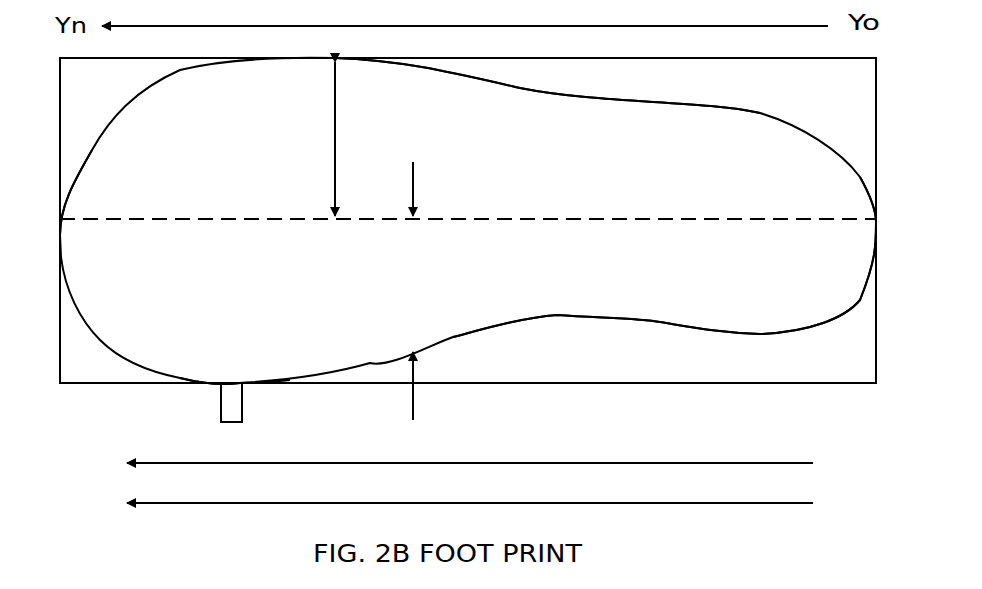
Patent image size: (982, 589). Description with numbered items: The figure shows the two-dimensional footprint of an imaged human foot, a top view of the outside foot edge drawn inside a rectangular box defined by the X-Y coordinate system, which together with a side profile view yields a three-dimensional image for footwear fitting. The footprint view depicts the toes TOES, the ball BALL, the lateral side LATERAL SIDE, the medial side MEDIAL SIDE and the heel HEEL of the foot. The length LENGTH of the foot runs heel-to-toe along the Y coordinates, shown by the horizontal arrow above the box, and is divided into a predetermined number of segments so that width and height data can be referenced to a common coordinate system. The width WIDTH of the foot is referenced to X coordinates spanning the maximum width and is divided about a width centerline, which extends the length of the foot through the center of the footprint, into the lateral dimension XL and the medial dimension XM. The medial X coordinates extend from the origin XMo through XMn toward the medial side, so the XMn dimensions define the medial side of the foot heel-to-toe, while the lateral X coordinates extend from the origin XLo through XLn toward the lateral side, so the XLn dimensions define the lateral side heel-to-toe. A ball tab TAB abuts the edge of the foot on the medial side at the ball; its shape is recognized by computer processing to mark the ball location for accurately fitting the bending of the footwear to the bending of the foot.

The toes TOES is at (83, 167).
The width WIDTH is at (876, 92).
The lateral side LATERAL SIDE is at (488, 80).
The heel HEEL is at (876, 231).
The medial side MEDIAL SIDE is at (741, 330).
The ball BALL is at (230, 383).
The length LENGTH is at (447, 382).
The ball tab TAB is at (222, 393).
The lateral dimension XL is at (335, 139).
The medial dimension XM is at (412, 291).
The medial X coordinate n XMn is at (437, 464).
The medial X coordinate origin XMo is at (788, 457).
The lateral X coordinate n XLn is at (437, 505).
The lateral X coordinate origin XLo is at (789, 497).